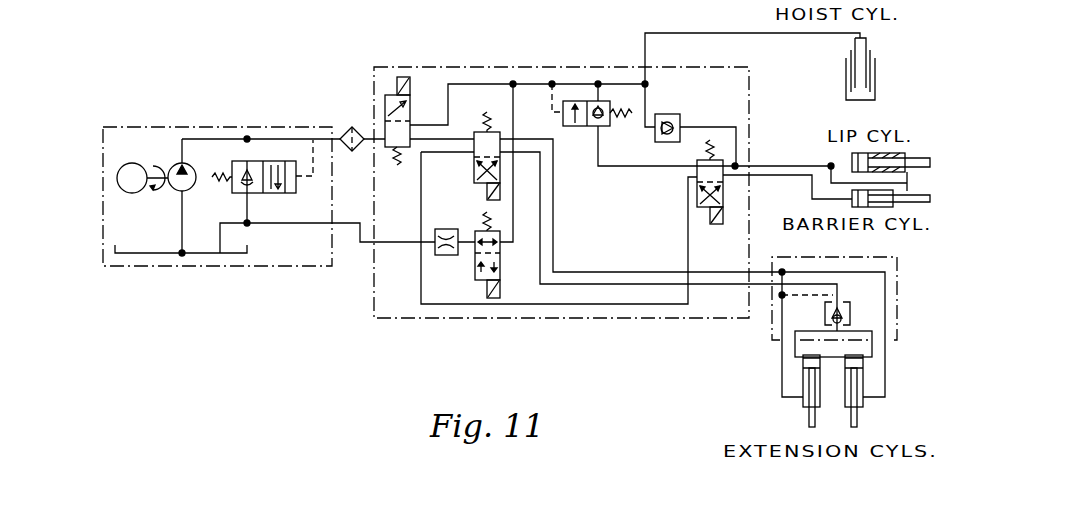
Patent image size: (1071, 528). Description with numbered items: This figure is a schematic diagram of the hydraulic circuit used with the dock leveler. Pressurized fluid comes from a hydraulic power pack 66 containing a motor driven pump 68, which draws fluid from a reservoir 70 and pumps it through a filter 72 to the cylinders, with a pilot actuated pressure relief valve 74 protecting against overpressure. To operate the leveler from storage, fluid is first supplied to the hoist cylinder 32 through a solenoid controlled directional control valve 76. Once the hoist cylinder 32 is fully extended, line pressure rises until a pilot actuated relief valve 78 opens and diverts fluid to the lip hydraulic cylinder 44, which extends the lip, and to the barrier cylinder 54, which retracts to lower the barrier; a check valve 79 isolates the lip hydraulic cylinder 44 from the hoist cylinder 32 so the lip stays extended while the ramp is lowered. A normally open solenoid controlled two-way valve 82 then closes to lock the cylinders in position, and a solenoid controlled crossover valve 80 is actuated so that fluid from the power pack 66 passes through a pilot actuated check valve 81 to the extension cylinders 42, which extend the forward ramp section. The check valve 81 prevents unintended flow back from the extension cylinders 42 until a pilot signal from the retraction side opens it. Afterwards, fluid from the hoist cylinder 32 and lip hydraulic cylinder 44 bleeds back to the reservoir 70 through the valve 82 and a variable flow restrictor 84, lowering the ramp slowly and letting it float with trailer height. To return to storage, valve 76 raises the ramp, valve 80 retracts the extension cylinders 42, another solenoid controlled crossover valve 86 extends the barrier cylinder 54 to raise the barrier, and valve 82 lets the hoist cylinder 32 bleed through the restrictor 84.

The hoist cylinder 32 is at (846, 70).
The extension cylinders 42 is at (865, 372).
The lip hydraulic cylinder 44 is at (851, 156).
The barrier cylinder 54 is at (913, 191).
The hydraulic power pack 66 is at (125, 268).
The motor driven pump 68 is at (172, 164).
The reservoir 70 is at (160, 252).
The filter 72 is at (348, 130).
The pilot actuated pressure relief valve 74 is at (272, 188).
The solenoid controlled directional control valve 76 is at (408, 110).
The pilot actuated relief valve 78 is at (587, 128).
The check valve 79 is at (667, 116).
The solenoid controlled crossover valve 80 is at (473, 168).
The pilot actuated check valve 81 is at (850, 308).
The solenoid controlled two-way valve 82 is at (485, 278).
The variable flow restrictor 84 is at (447, 257).
The solenoid controlled crossover valve 86 is at (697, 200).